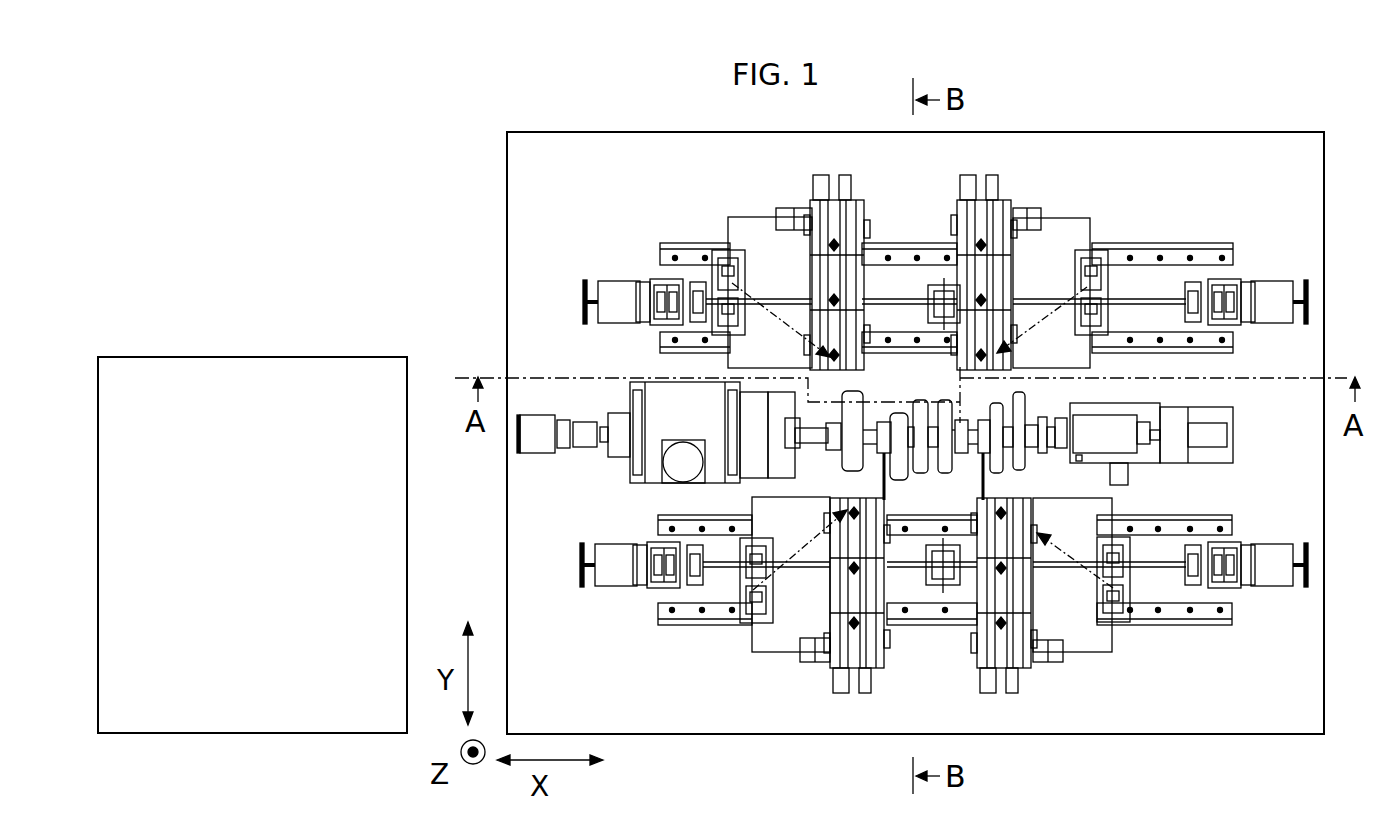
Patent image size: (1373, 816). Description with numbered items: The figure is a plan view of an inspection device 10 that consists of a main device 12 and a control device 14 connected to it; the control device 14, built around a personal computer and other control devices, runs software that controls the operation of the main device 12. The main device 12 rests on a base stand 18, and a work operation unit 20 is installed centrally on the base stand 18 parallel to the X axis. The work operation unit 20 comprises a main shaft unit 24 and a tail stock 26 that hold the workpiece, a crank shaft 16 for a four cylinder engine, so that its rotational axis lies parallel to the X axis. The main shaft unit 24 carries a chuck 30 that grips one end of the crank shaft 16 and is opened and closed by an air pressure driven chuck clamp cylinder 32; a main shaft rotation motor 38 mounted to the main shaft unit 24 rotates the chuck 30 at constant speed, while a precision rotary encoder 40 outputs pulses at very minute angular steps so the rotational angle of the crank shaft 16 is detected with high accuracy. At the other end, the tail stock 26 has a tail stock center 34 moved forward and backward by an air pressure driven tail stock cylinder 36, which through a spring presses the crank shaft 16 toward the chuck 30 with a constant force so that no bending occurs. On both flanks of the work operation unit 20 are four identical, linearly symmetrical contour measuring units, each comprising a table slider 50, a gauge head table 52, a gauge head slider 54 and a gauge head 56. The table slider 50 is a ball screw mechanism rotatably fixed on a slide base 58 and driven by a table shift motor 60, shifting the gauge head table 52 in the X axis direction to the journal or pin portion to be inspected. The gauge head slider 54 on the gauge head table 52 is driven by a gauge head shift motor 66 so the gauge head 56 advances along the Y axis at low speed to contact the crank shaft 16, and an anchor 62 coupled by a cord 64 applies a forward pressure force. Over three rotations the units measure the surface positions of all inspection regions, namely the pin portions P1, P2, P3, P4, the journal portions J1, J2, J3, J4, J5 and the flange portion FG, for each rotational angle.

The inspection device 10 is at (333, 141).
The main device 12 is at (851, 433).
The control device 14 is at (214, 345).
The crank shaft 16 is at (871, 365).
The base stand 18 is at (530, 293).
The work operation unit 20 is at (608, 480).
The main shaft unit 24 is at (665, 395).
The tail stock 26 is at (1195, 395).
The chuck 30 is at (778, 478).
The chuck clamp cylinder 32 is at (518, 433).
The tail stock center 34 is at (1060, 448).
The tail stock cylinder 36 is at (1200, 447).
The main shaft rotation motor 38 is at (683, 443).
The precision rotary encoder 40 is at (620, 410).
The table slider 50 is at (1165, 271).
The gauge head table 52 is at (1063, 232).
The gauge head slider 54 is at (955, 392).
The gauge head 56 is at (946, 462).
The slide base 58 is at (1205, 243).
The table shift motor 60 is at (1265, 283).
The anchor 62 is at (1090, 290).
The cord 64 is at (1018, 336).
The gauge head shift motor 66 is at (1013, 208).
The journal portion J1 is at (835, 450).
The journal portion J2 is at (896, 416).
The journal portion J3 is at (933, 420).
The journal portion J4 is at (978, 420).
The journal portion J5 is at (1040, 425).
The pin portion P1 is at (866, 455).
The pin portion P2 is at (884, 470).
The pin portion P3 is at (962, 470).
The pin portion P4 is at (993, 468).
The flange portion FG is at (1042, 456).